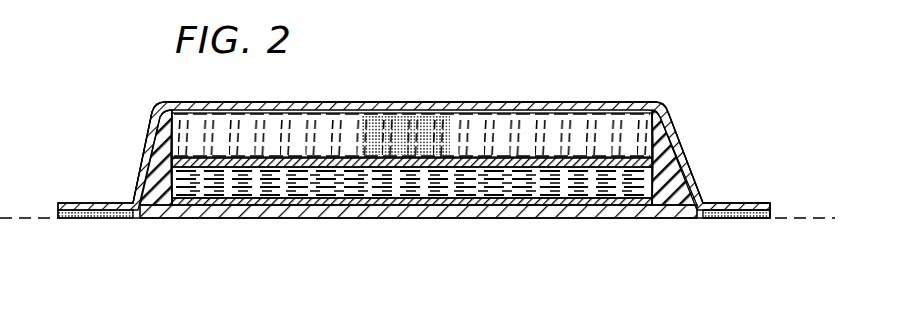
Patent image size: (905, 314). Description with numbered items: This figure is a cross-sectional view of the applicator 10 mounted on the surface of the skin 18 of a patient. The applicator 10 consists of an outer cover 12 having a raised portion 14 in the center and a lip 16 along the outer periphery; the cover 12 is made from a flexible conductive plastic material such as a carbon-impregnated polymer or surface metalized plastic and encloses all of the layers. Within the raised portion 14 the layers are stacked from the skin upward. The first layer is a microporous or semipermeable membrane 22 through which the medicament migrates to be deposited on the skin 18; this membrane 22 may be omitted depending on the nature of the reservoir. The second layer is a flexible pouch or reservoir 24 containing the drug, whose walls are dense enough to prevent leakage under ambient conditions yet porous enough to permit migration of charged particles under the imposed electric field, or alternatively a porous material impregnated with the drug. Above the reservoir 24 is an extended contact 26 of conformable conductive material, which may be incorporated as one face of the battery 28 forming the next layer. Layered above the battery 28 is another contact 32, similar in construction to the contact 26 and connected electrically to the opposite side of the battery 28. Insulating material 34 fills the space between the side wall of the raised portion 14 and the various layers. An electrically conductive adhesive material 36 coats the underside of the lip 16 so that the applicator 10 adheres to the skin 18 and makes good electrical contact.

The applicator 10 is at (477, 90).
The outer cover 12 is at (142, 151).
The raised portion 14 is at (253, 102).
The lip 16 is at (751, 203).
The skin 18 is at (783, 218).
The microporous membrane 22 is at (444, 218).
The reservoir 24 is at (243, 205).
The extended contact 26 is at (410, 112).
The battery 28 is at (647, 132).
The contact 32 is at (361, 112).
The insulating material 34 is at (153, 188).
The electrically conductive adhesive material 36 is at (82, 220).